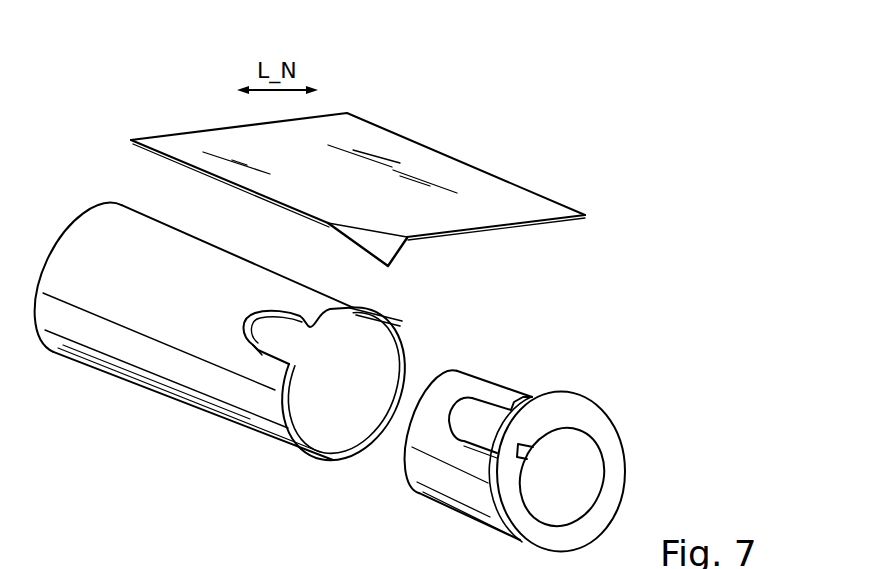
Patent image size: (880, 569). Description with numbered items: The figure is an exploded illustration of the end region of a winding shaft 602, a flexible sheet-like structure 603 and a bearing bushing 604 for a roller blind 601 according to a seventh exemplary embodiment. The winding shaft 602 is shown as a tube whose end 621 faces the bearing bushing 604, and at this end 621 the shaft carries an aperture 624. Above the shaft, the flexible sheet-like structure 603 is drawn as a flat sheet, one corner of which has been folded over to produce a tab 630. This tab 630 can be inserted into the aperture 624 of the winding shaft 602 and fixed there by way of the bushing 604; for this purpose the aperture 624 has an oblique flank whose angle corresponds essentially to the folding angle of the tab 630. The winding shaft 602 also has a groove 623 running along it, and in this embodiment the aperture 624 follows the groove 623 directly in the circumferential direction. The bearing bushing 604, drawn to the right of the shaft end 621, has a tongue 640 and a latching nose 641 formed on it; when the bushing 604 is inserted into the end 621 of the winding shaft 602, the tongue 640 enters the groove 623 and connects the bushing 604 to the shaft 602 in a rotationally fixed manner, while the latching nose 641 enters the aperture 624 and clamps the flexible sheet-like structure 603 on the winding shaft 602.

The roller blind 601 is at (141, 95).
The winding shaft 602 is at (190, 437).
The flexible sheet-like structure 603 is at (464, 136).
The bearing bushing 604 is at (634, 419).
The end 621 is at (323, 464).
The groove 623 is at (255, 345).
The aperture 624 is at (385, 322).
The tab 630 is at (388, 252).
The tongue 640 is at (477, 427).
The latching nose 641 is at (531, 397).